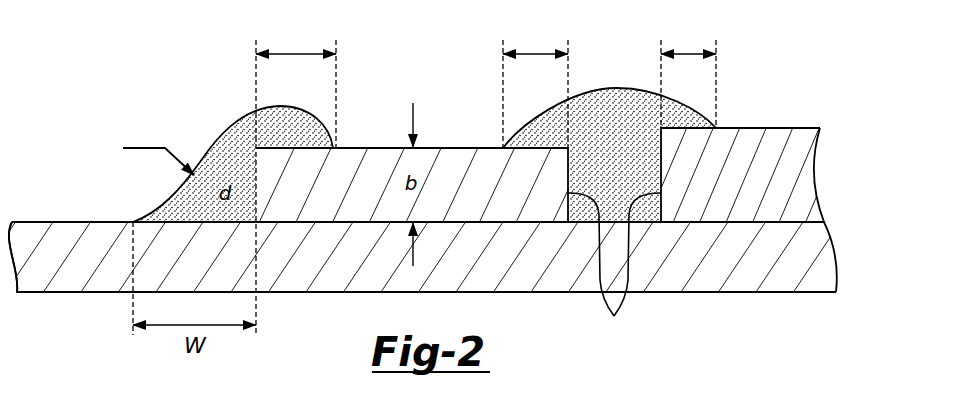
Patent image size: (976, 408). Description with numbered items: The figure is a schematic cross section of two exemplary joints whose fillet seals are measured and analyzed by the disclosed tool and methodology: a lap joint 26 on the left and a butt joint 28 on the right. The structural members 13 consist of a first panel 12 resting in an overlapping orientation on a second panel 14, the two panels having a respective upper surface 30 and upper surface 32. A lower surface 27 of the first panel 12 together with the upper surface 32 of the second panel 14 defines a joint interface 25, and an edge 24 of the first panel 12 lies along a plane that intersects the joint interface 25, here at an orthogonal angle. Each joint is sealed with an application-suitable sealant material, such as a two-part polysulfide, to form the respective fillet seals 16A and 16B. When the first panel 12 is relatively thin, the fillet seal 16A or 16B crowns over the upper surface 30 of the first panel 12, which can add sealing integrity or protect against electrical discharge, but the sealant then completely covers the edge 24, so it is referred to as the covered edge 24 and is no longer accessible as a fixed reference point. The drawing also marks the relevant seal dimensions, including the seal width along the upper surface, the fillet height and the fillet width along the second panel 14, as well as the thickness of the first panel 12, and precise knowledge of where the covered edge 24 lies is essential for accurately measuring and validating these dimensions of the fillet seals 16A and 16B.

The first panel 12 is at (790, 157).
The structural members 13 is at (831, 184).
The second panel 14 is at (803, 268).
The fillet seal 16A is at (245, 118).
The fillet seal 16B is at (692, 108).
The covered edge 24 is at (290, 316).
The joint interface 25 is at (831, 222).
The lap joint 26 is at (346, 77).
The lower surface 27 is at (780, 231).
The butt joint 28 is at (726, 78).
The upper surface 30 is at (808, 125).
The upper surface 32 is at (64, 219).